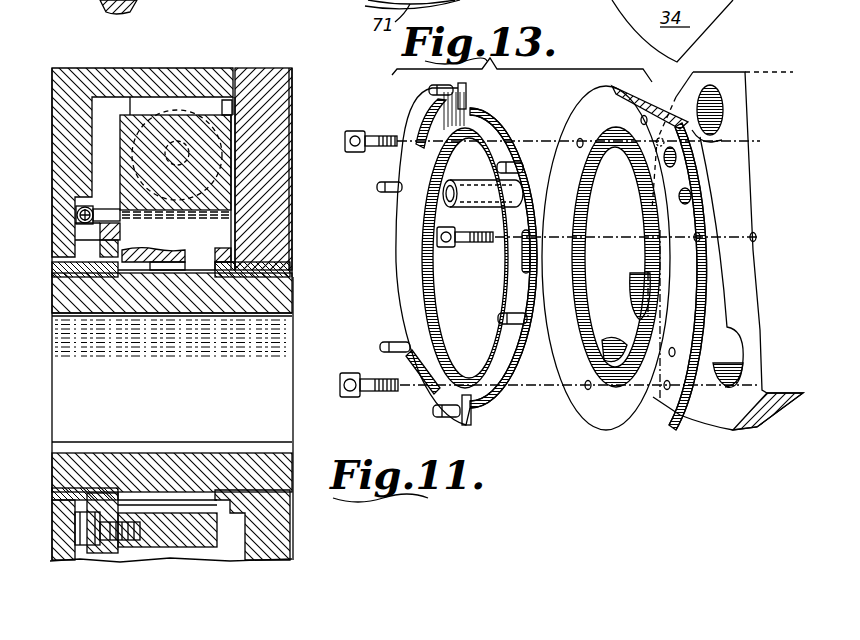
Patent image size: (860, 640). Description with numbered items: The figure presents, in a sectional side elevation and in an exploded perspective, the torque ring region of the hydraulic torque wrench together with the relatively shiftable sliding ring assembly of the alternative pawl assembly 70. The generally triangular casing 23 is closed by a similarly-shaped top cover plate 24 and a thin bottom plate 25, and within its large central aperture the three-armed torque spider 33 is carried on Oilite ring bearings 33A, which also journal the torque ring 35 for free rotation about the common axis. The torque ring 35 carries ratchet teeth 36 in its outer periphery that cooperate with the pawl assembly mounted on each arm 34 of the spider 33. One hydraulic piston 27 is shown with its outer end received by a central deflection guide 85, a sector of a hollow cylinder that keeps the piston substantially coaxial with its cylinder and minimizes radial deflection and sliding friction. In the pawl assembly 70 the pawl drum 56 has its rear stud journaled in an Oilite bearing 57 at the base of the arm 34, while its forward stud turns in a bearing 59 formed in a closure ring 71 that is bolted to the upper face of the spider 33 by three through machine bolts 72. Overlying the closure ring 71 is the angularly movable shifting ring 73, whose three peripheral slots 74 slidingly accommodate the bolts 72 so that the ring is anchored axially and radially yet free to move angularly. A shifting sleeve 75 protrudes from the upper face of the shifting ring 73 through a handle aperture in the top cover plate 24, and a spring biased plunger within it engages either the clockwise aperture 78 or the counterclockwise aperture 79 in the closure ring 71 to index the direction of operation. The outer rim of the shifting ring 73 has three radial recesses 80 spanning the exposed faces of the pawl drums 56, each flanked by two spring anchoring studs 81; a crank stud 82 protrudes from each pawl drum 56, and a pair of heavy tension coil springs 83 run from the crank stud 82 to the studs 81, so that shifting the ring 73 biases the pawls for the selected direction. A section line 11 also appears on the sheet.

In FIG. 13, the section line 11 is at (335, 30).
In FIG. 11, the casing 23 is at (268, 113).
In FIG. 11, the top cover plate 24 is at (52, 70).
In FIG. 11, the bottom plate 25 is at (292, 140).
In FIG. 11, the piston 27 is at (168, 116).
In FIG. 11, the torque spider 33 is at (290, 534).
In FIG. 13, the torque spider 33 is at (752, 129).
In FIG. 11, the Oilite ring bearings 33A is at (53, 262).
In FIG. 11, the arm 34 is at (230, 96).
In FIG. 13, the arm 34 is at (615, 338).
In FIG. 11, the torque ring 35 is at (282, 297).
In FIG. 11, the ratchet teeth 36 is at (167, 268).
In FIG. 11, the pawl drum 56 is at (207, 227).
In FIG. 11, the Oilite bearing 57 is at (227, 240).
In FIG. 11, the bearing 59 is at (100, 234).
In FIG. 11, the pawl assembly 70 is at (148, 263).
In FIG. 11, the closure ring 71 is at (110, 267).
In FIG. 13, the closure ring 71 is at (605, 412).
In FIG. 11, the machine bolts 72 is at (67, 533).
In FIG. 13, the machine bolts 72 is at (365, 133).
In FIG. 11, the shifting ring 73 is at (53, 260).
In FIG. 13, the shifting ring 73 is at (494, 103).
In FIG. 13, the peripheral slots 74 is at (418, 147).
In FIG. 13, the shifting sleeve 75 is at (478, 180).
In FIG. 13, the clockwise aperture 78 is at (691, 196).
In FIG. 13, the counterclockwise aperture 79 is at (676, 160).
In FIG. 13, the radial recesses 80 is at (487, 118).
In FIG. 13, the spring anchoring studs 81 is at (429, 90).
In FIG. 11, the crank stud 82 is at (108, 210).
In FIG. 11, the tension coil springs 83 is at (86, 207).
In FIG. 11, the deflection guides 85 is at (199, 105).